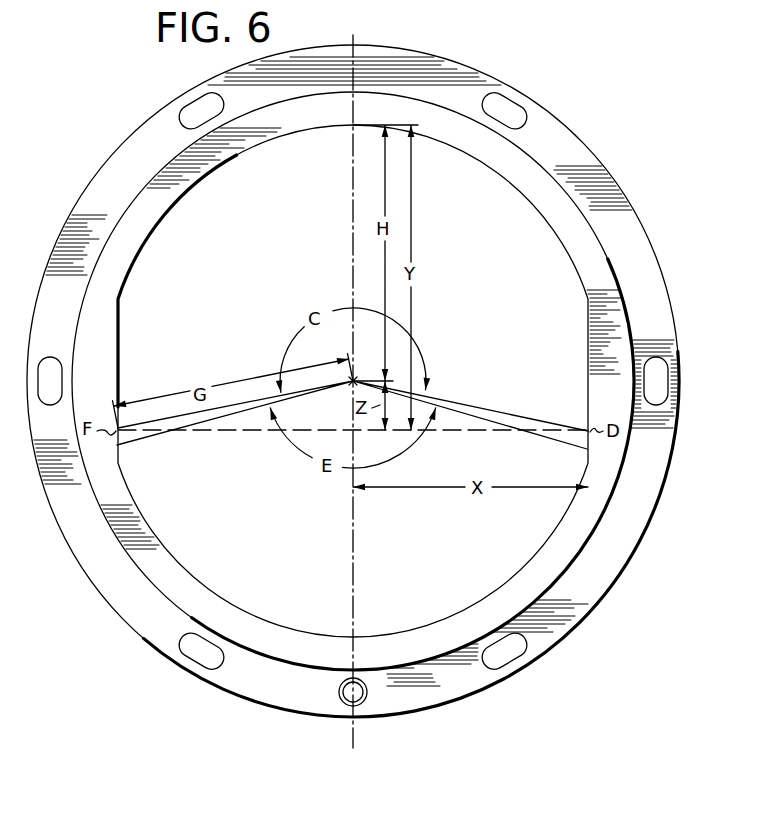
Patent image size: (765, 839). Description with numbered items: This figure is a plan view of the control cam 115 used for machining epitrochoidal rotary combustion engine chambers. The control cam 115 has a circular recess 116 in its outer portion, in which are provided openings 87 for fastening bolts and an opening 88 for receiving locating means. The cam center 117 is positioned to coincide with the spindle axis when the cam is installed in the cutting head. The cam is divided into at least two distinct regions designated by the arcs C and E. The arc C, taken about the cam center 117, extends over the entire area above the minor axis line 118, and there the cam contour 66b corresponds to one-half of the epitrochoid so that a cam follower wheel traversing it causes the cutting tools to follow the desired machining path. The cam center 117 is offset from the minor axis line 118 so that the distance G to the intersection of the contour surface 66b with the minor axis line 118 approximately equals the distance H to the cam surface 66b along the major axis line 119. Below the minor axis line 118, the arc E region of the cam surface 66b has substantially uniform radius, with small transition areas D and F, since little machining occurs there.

The cam contour surface 66b is at (537, 213).
The openings for fastening bolts 87 is at (189, 116).
The opening for locating means 88 is at (355, 692).
The control cam 115 is at (120, 492).
The circular recess 116 is at (637, 245).
The cam center 117 is at (349, 384).
The minor axis line 118 is at (471, 434).
The major axis line 119 is at (350, 229).